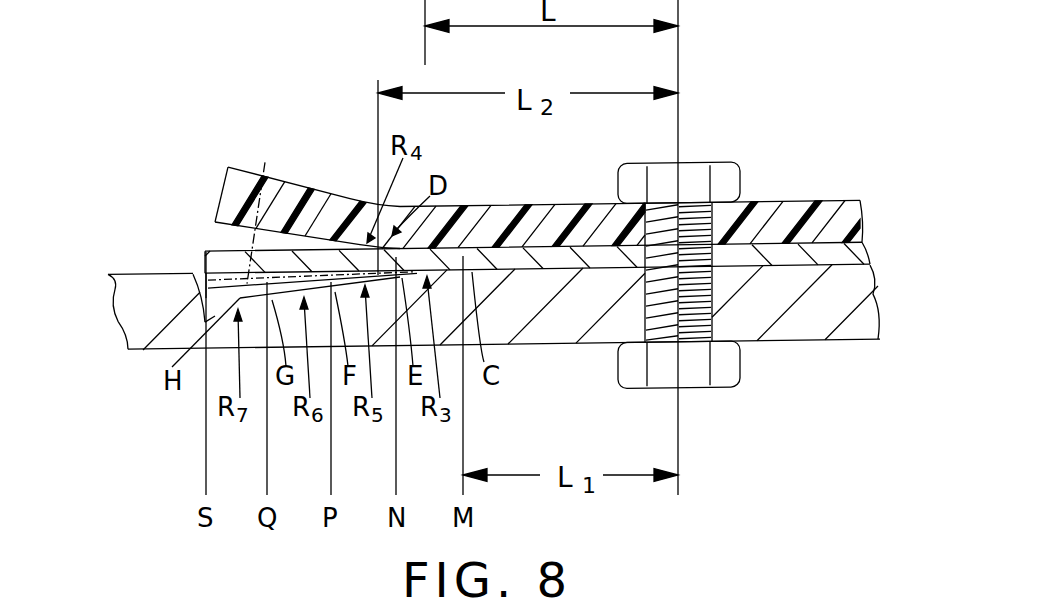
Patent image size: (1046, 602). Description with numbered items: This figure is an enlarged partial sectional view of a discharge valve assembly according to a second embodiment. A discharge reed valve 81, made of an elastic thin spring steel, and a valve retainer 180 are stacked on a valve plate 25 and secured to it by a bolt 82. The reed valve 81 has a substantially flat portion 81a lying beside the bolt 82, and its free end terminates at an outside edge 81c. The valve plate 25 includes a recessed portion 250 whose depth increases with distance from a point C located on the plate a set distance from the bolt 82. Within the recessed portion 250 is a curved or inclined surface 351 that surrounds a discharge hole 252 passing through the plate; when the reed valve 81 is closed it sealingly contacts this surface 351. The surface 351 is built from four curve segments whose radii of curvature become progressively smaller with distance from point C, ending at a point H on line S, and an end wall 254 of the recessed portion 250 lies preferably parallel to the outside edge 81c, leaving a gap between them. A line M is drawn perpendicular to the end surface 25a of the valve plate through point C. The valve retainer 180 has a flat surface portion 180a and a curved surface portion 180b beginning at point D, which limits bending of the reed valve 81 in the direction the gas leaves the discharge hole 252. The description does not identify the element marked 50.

The valve plate 25 is at (820, 315).
The end surface 25a is at (130, 278).
The end wall 254 is at (192, 279).
The inclined surface 351 is at (216, 322).
The discharge hole 252 is at (315, 308).
The discharge reed valve 81 is at (202, 243).
The flat portion 81a is at (558, 257).
The outside edge 81c is at (205, 257).
The gap 50 is at (207, 297).
The recessed portion 250 is at (276, 210).
The valve retainer 180 is at (229, 152).
The flat surface portion 180a is at (525, 222).
The curved surface portion 180b is at (305, 207).
The bolt 82 is at (698, 183).